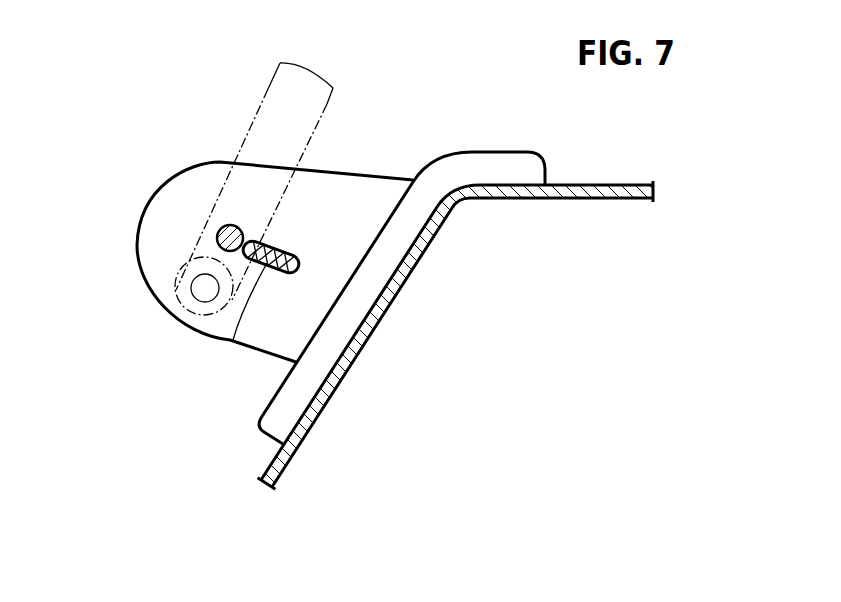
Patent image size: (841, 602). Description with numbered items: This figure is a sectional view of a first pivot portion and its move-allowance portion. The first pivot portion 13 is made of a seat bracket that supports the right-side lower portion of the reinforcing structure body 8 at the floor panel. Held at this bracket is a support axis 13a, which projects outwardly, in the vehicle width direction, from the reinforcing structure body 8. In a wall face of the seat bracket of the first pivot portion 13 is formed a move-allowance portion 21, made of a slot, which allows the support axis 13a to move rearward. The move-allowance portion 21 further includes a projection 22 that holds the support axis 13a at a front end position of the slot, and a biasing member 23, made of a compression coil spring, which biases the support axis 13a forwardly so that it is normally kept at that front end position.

The reinforcing structure body 8 is at (268, 86).
The first pivot portion 13 is at (173, 183).
The support axis 13a is at (218, 238).
The move-allowance portion 21 is at (300, 266).
The projection 22 is at (253, 228).
The biasing member 23 is at (233, 340).